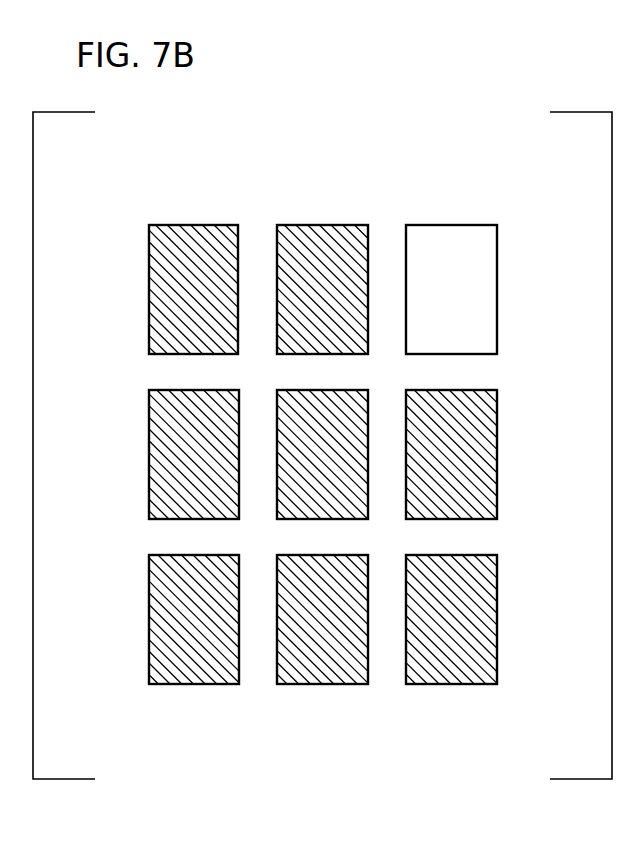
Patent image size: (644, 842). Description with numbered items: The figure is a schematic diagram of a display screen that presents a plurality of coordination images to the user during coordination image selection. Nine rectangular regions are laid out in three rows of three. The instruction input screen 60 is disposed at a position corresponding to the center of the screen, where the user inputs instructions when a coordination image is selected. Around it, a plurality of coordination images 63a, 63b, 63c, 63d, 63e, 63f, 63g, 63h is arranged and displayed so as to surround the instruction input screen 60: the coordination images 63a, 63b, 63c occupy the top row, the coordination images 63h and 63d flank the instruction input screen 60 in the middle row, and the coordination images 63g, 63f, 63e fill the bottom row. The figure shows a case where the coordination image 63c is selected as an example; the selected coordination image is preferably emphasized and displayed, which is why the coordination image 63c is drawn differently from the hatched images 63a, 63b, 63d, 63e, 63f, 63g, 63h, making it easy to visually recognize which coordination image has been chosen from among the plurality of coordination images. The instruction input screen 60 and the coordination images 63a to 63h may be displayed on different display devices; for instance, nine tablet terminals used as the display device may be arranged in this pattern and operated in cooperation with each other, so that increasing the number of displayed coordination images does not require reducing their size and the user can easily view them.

The instruction input screen 60 is at (330, 390).
The coordination image 63a is at (193, 238).
The coordination image 63b is at (322, 238).
The coordination image 63c is at (453, 238).
The coordination image 63d is at (490, 435).
The coordination image 63e is at (490, 620).
The coordination image 63f is at (330, 684).
The coordination image 63g is at (157, 618).
The coordination image 63h is at (157, 435).